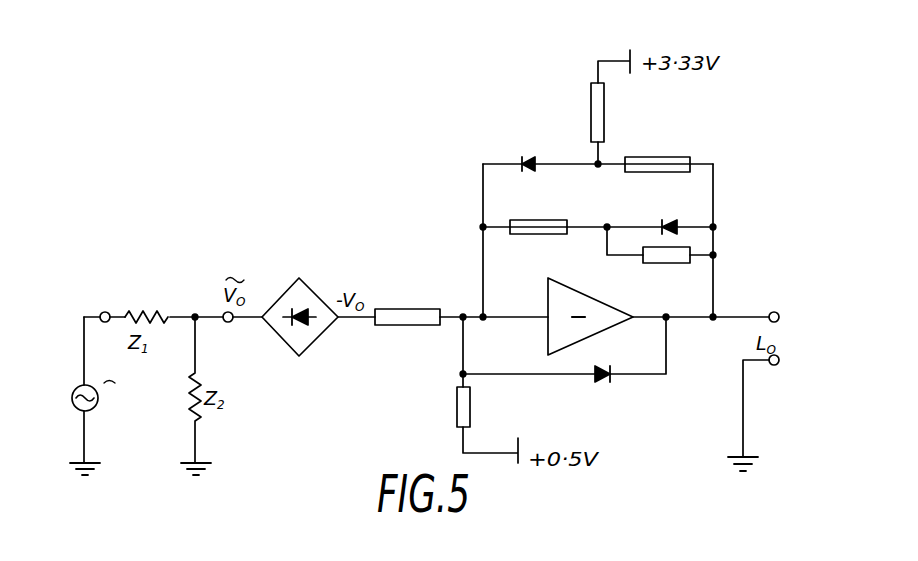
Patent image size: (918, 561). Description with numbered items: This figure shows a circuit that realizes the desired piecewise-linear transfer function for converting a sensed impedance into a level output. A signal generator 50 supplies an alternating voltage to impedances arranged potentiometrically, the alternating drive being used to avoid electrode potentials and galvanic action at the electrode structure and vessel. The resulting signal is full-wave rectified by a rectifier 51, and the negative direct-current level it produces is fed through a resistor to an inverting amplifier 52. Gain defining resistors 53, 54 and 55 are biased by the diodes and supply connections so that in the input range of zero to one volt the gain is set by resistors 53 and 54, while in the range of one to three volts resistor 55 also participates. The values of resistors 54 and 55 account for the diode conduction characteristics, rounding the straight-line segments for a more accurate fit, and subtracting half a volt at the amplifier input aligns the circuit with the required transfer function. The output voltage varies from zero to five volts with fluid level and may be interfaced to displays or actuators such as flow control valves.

The signal generator 50 is at (96, 387).
The rectifier 51 is at (309, 288).
The inverting amplifier 52 is at (598, 298).
The gain defining resistor 53 is at (410, 309).
The gain defining resistor 54 is at (551, 221).
The gain defining resistor 55 is at (668, 157).